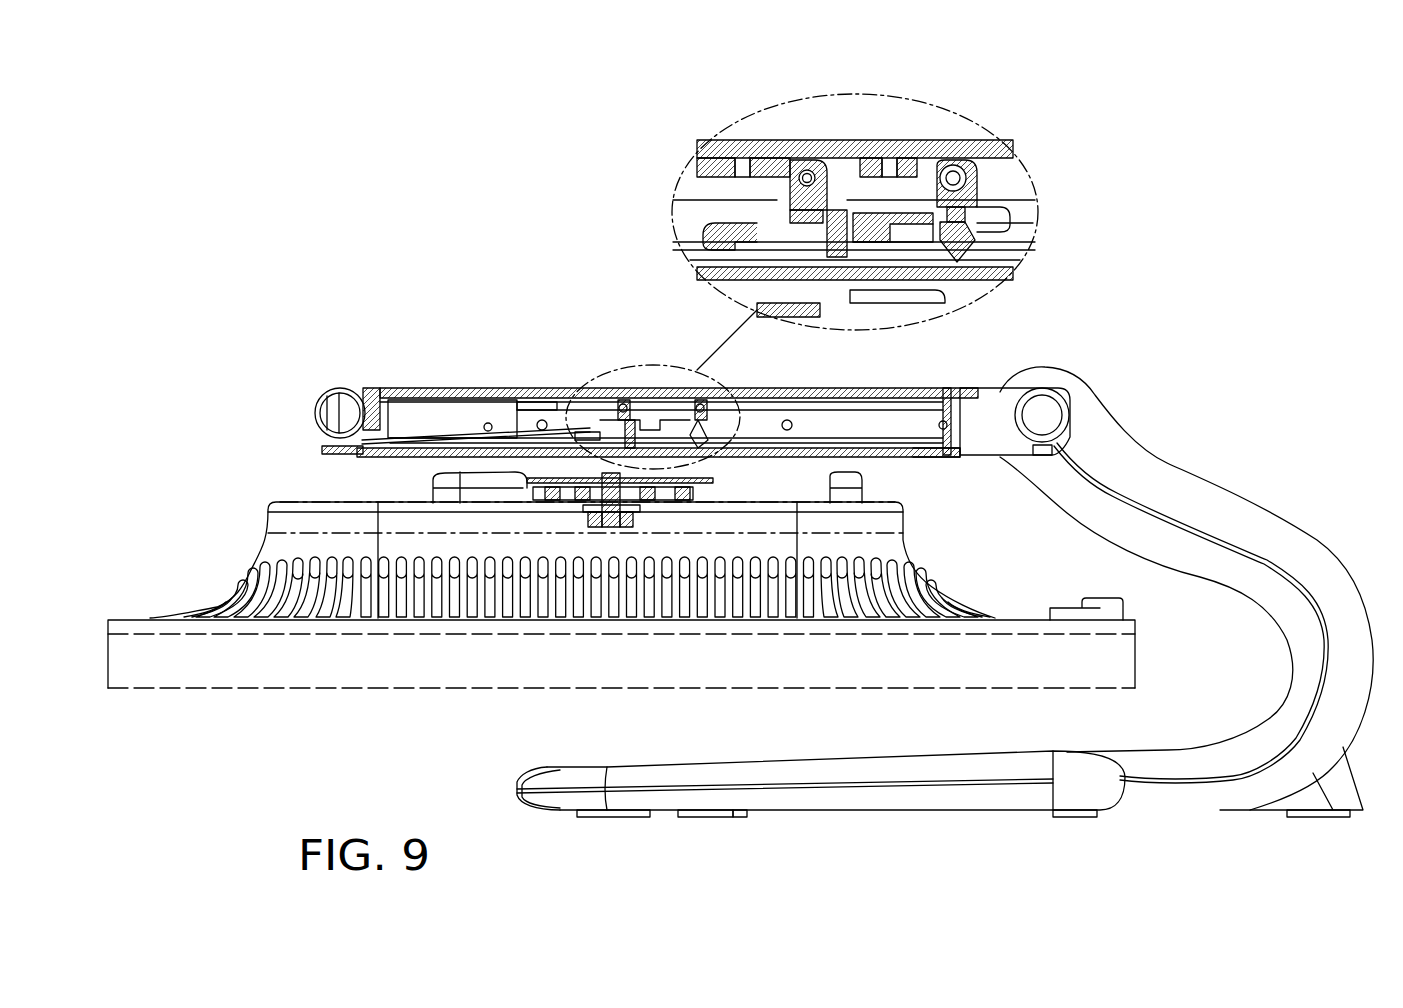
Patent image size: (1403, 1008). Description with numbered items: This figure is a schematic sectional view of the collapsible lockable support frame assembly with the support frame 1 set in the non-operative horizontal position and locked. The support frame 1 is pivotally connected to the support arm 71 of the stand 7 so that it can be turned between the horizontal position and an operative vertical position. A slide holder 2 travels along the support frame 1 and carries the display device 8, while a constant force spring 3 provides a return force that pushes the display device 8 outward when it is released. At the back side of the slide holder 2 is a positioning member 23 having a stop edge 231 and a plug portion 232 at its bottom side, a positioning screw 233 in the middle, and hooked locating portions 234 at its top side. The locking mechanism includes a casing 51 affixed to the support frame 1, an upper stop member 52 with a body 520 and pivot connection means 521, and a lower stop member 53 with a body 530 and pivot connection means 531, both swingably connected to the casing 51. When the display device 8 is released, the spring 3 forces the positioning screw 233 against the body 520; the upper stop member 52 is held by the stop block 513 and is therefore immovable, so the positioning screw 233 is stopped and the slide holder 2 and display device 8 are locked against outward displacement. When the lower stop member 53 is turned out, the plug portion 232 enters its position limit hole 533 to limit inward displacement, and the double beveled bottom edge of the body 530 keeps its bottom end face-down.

The support frame 1 is at (930, 157).
The slide holder 2 is at (455, 487).
The constant force spring 3 is at (335, 388).
The stand 7 is at (873, 800).
The display device 8 is at (460, 670).
The positioning member 23 is at (810, 222).
The casing 51 is at (710, 163).
The upper stop member 52 is at (798, 198).
The lower stop member 53 is at (970, 210).
The support arm 71 is at (1163, 497).
The stop edge 231 is at (937, 243).
The plug portion 232 is at (925, 222).
The positioning screw 233 is at (838, 223).
The hooked locating portions 234 is at (727, 240).
The stop block 513 is at (775, 187).
The body 520 is at (810, 222).
The pivot connection means 521 is at (803, 170).
The body 530 is at (957, 243).
The pivot connection means 531 is at (960, 170).
The position limit hole 533 is at (955, 220).